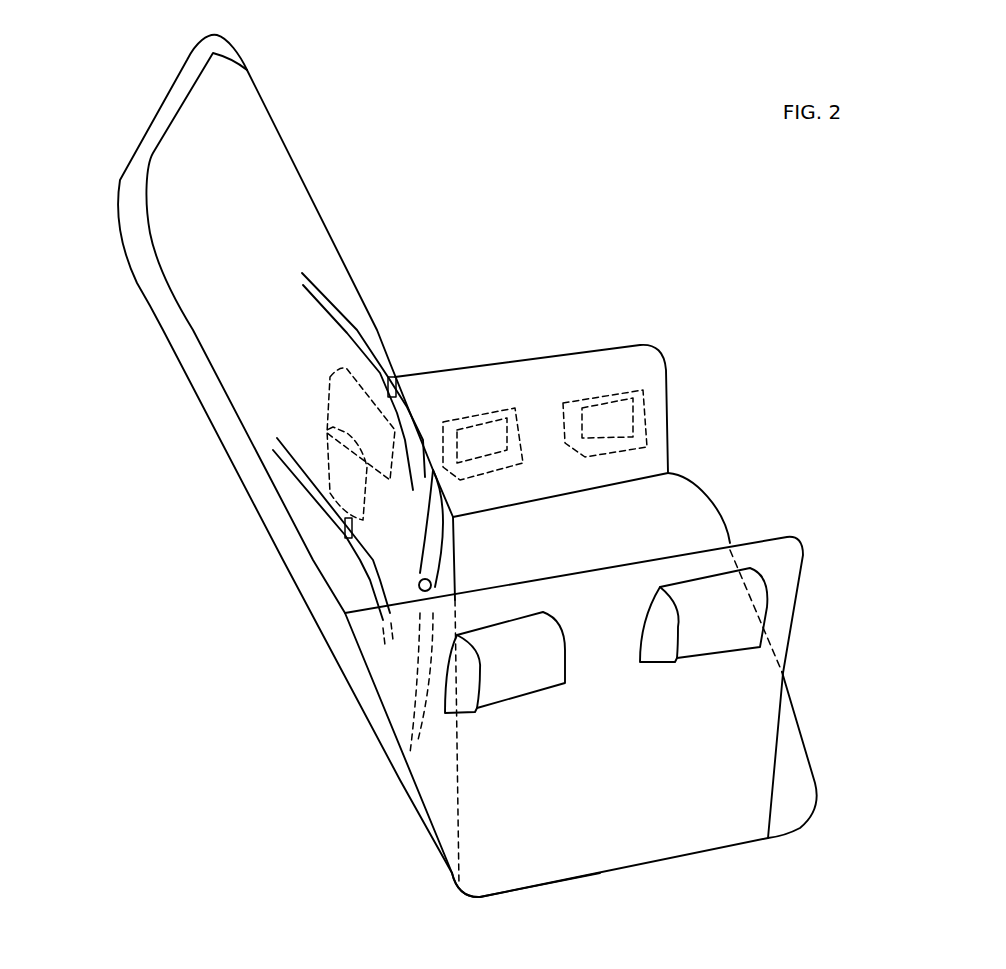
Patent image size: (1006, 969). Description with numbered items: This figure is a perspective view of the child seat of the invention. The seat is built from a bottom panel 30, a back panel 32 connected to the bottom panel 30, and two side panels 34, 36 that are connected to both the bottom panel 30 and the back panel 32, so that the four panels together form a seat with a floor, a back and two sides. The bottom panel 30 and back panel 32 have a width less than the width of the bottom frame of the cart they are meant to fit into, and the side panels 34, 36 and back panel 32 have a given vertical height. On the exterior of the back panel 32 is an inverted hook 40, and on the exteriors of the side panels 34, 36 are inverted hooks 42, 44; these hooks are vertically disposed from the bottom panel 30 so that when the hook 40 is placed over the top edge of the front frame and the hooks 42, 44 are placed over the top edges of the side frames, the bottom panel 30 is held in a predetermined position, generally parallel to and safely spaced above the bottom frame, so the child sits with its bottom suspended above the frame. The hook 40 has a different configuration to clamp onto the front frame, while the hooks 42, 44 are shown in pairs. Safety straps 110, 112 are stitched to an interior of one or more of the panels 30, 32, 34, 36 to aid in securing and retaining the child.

The bottom panel 30 is at (813, 783).
The back panel 32 is at (343, 257).
The side panel 34 is at (523, 853).
The side panel 36 is at (817, 587).
The inverted hook 40 is at (327, 438).
The inverted hook 42 is at (715, 593).
The inverted hook 44 is at (643, 410).
The safety strap 110 is at (313, 280).
The safety strap 112 is at (433, 470).